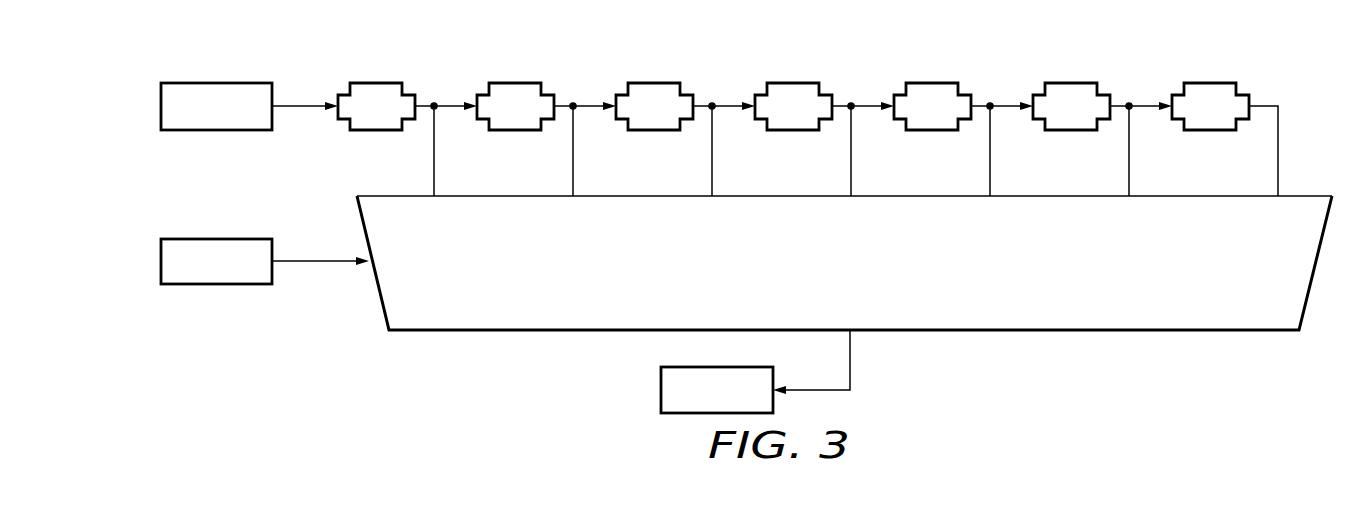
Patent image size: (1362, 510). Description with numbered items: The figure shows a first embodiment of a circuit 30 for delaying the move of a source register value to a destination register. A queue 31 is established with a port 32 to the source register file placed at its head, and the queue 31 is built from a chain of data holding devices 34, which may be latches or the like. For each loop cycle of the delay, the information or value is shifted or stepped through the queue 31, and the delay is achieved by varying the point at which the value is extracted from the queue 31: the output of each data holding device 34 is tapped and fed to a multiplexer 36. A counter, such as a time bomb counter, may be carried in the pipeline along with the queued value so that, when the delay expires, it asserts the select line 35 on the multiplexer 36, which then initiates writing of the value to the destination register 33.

The circuit 30 is at (316, 318).
The queue 31 is at (1250, 76).
The port to source register file 32 is at (217, 83).
The destination register 33 is at (661, 390).
The data holding device 34 is at (377, 130).
The select line 35 is at (215, 284).
The multiplexer 36 is at (1317, 196).